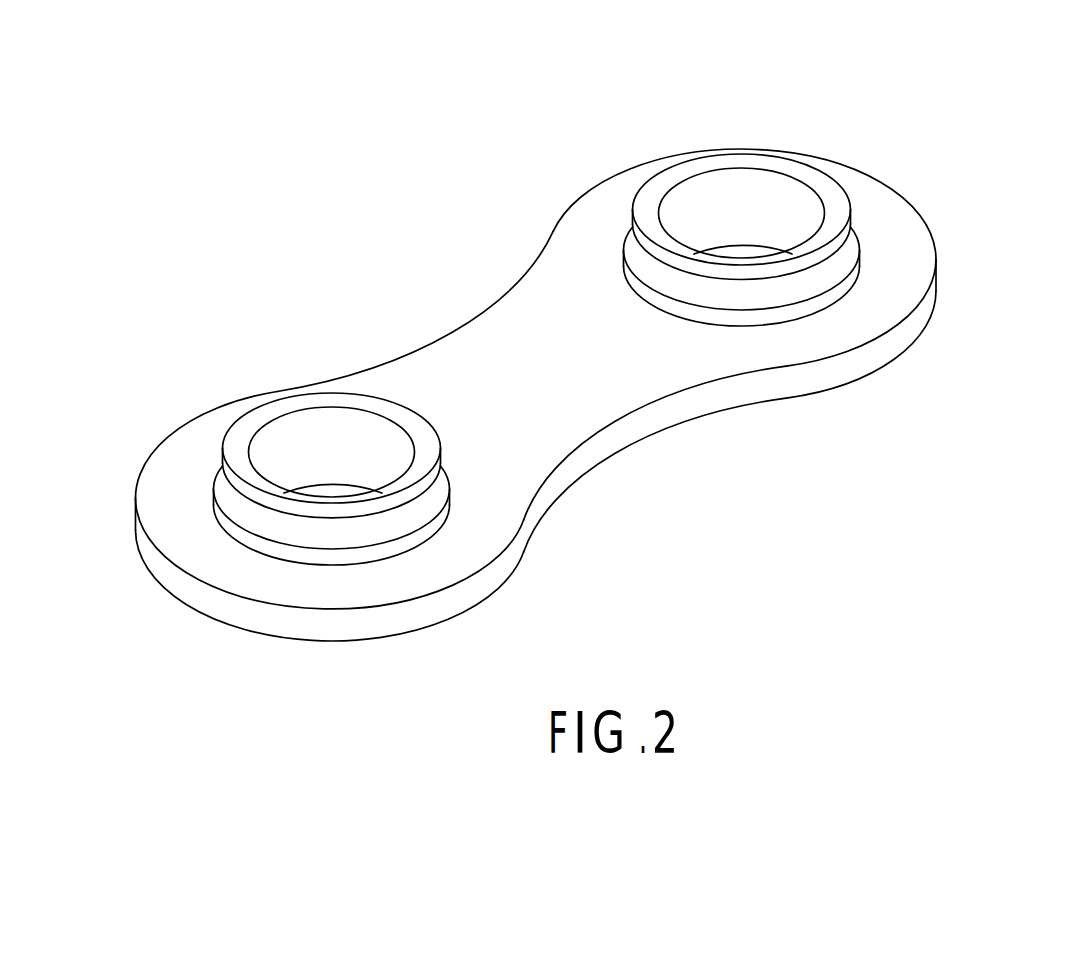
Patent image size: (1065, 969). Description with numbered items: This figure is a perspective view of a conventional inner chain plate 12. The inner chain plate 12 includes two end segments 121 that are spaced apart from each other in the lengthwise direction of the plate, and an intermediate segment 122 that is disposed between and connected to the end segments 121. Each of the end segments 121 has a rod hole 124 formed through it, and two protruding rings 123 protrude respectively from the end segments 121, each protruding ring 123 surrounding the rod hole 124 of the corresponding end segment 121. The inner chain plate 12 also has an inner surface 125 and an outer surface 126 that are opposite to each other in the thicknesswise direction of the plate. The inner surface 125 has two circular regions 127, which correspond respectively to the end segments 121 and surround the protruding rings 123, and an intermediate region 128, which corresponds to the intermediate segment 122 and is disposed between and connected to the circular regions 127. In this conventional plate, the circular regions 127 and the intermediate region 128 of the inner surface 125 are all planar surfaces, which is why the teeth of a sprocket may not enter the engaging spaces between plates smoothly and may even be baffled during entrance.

The inner chain plate 12 is at (586, 387).
The end segments 121 is at (572, 484).
The intermediate segment 122 is at (645, 429).
The protruding rings 123 is at (255, 419).
The rod hole 124 is at (335, 420).
The inner surface 125 is at (586, 414).
The outer surface 126 is at (772, 403).
The circular regions 127 is at (217, 570).
The intermediate region 128 is at (572, 338).